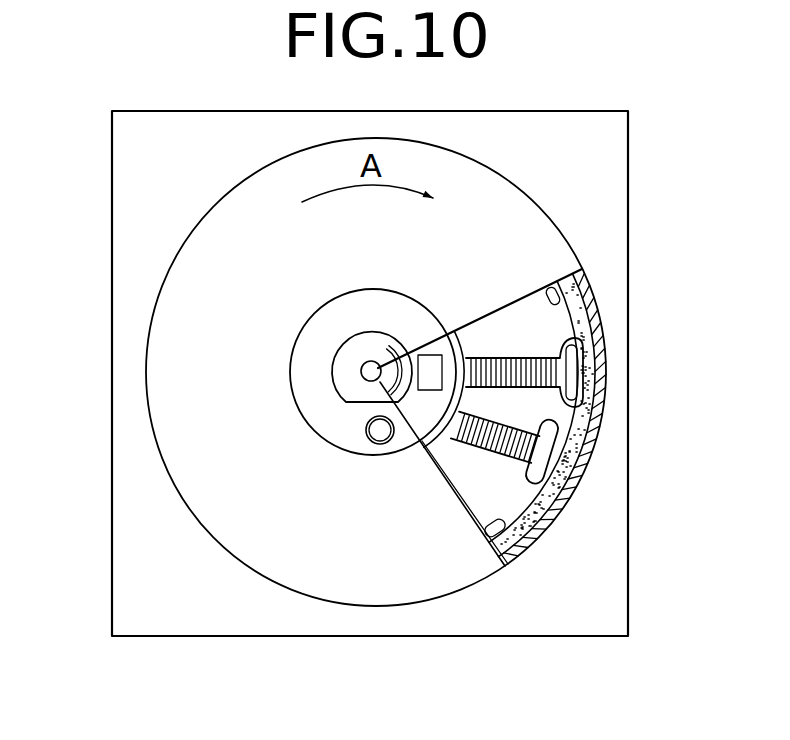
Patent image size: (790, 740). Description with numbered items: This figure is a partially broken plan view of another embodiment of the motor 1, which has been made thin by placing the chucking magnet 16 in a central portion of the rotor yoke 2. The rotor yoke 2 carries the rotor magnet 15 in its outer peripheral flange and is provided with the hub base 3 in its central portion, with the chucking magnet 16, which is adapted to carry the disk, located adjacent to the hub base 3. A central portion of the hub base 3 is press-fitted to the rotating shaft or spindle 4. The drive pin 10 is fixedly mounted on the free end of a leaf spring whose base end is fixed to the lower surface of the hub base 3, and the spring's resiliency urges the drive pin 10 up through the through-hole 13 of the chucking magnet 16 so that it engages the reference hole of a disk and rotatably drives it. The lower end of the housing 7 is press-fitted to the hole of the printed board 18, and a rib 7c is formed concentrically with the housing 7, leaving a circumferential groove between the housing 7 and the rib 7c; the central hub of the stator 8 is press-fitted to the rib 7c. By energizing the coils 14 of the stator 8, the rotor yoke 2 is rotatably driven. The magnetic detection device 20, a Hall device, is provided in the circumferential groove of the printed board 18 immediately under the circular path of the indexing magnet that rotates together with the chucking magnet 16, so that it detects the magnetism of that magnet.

The motor 1 is at (580, 258).
The rotor yoke 2 is at (170, 328).
The hub base 3 is at (344, 401).
The rotating shaft or spindle 4 is at (362, 371).
The housing 7 is at (415, 352).
The rib 7c is at (456, 326).
The stator 8 is at (538, 352).
The drive pin 10 is at (390, 398).
The through-hole 13 is at (378, 432).
The coils 14 is at (543, 387).
The rotor magnet 15 is at (598, 372).
The chucking magnet 16 is at (330, 433).
The printed board 18 is at (618, 165).
The magnetic detection device 20 is at (424, 368).